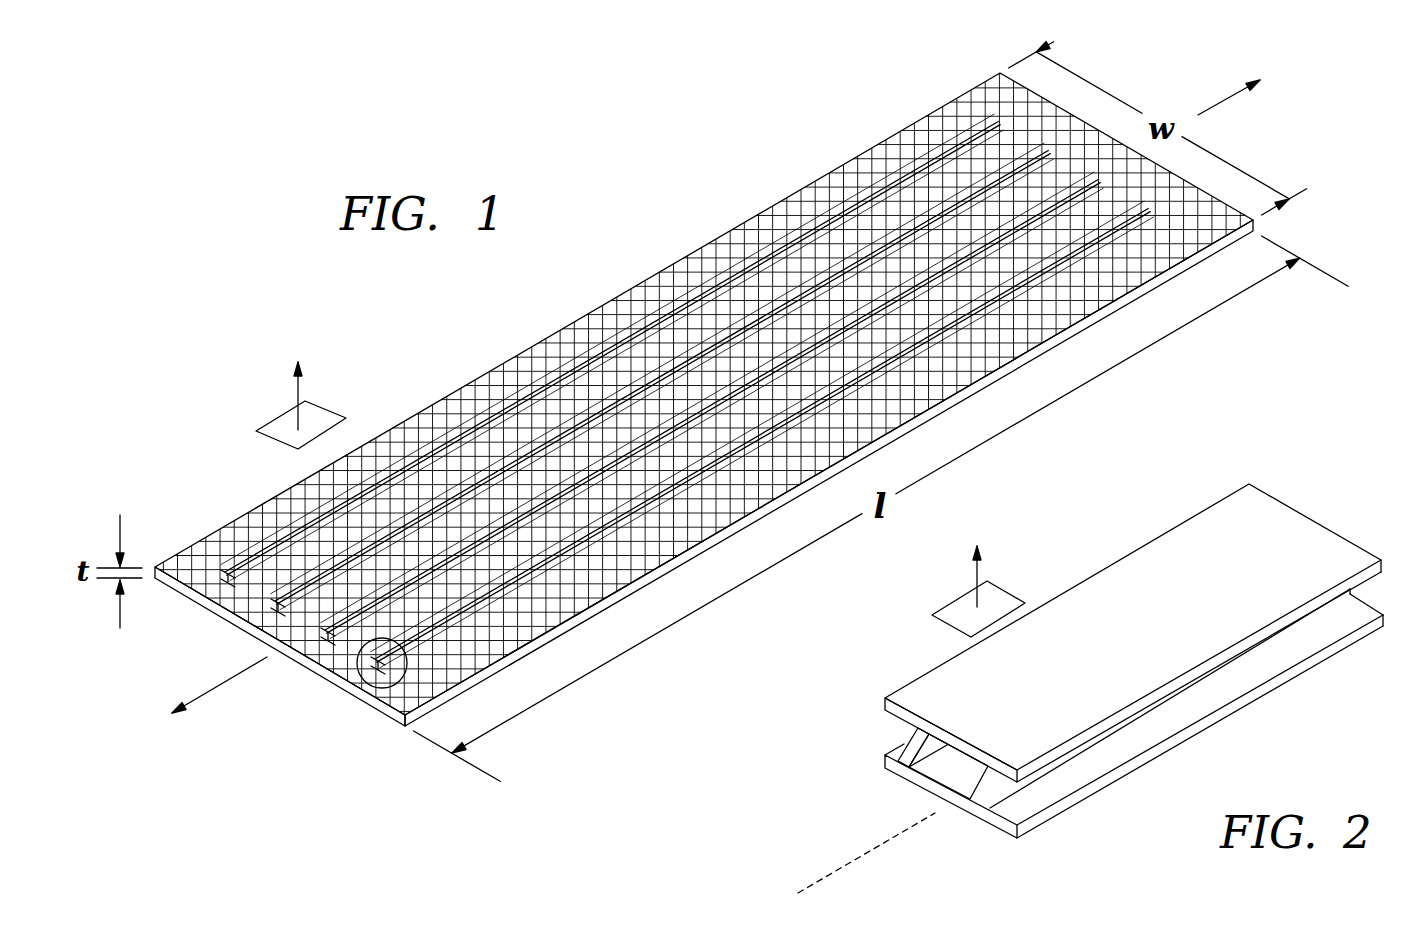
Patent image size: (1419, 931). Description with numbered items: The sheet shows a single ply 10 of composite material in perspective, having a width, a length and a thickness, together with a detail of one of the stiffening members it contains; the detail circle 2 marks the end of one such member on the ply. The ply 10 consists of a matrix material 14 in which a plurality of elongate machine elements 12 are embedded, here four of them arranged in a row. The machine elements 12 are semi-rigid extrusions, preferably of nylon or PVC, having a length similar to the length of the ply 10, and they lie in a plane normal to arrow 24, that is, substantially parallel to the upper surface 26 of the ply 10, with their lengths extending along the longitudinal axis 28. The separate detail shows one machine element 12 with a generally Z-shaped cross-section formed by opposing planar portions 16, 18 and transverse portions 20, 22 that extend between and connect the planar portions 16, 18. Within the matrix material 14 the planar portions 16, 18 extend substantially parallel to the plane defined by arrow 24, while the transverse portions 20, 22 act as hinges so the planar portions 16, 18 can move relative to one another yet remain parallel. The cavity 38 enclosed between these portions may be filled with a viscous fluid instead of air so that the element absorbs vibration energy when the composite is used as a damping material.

In FIG. 1, the ply 10 is at (704, 399).
In FIG. 1, the machine element 12 is at (723, 467).
In FIG. 2, the machine element 12 is at (1104, 659).
In FIG. 1, the matrix material 14 is at (722, 538).
In FIG. 2, the planar portion 16 is at (912, 682).
In FIG. 2, the planar portion 18 is at (894, 775).
In FIG. 2, the transverse portion 20 is at (913, 740).
In FIG. 2, the transverse portion 22 is at (990, 803).
In FIG. 1, the arrow 24 is at (297, 401).
In FIG. 2, the arrow 24 is at (975, 583).
In FIG. 1, the upper surface 26 is at (480, 378).
In FIG. 1, the longitudinal axis 28 is at (220, 684).
In FIG. 2, the longitudinal axis 28 is at (876, 854).
In FIG. 2, the cavity 38 is at (948, 785).
In FIG. 1, the detail region shown in FIG. 2 is at (352, 692).